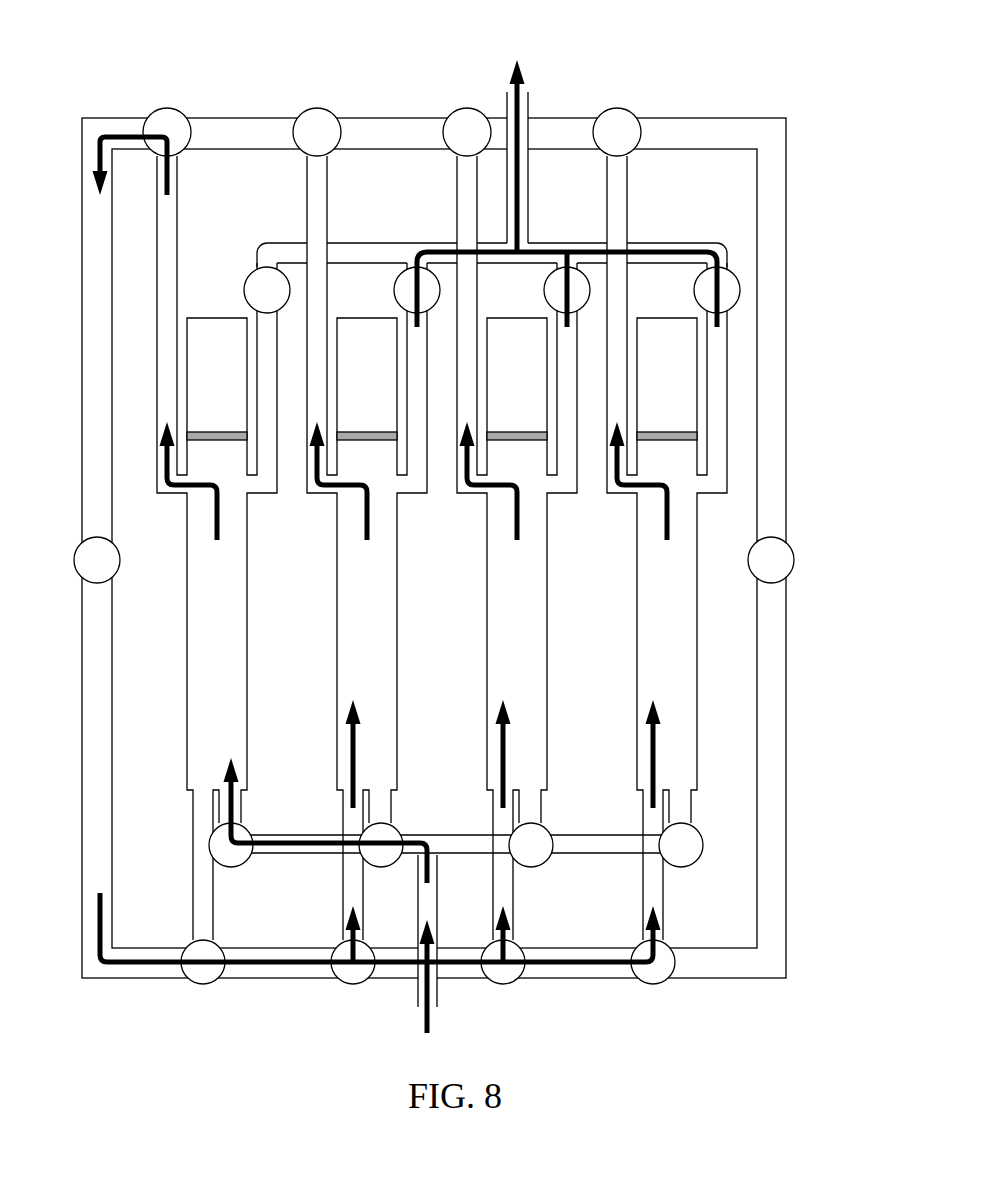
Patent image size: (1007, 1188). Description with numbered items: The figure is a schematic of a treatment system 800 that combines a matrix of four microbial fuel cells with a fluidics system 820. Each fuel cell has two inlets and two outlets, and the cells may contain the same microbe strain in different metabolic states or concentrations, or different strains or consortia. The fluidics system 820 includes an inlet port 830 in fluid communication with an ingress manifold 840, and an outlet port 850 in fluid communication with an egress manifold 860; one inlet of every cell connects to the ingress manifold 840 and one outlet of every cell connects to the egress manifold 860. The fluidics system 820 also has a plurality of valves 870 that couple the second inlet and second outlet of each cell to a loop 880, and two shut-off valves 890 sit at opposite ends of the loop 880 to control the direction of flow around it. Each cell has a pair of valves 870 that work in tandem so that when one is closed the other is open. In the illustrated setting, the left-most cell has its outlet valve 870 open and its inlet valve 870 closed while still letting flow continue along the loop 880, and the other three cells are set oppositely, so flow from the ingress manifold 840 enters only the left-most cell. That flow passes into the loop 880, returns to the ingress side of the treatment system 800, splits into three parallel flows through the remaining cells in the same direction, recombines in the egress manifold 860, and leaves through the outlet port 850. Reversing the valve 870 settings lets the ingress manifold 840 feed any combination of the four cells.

The treatment system 800 is at (704, 50).
The fluidics system 820 is at (786, 119).
The inlet port 830 is at (418, 998).
The ingress manifold 840 is at (318, 855).
The outlet port 850 is at (507, 108).
The egress manifold 860 is at (278, 243).
The valve 870 is at (308, 110).
The loop 880 is at (757, 227).
The shut-off valve 890 is at (120, 557).